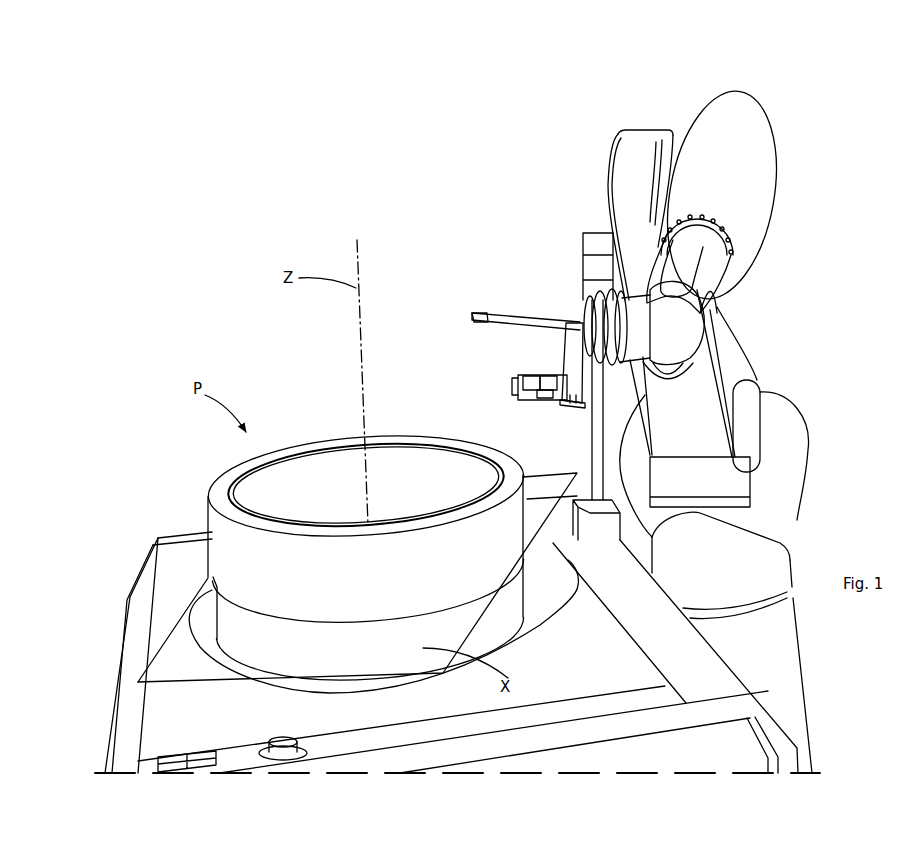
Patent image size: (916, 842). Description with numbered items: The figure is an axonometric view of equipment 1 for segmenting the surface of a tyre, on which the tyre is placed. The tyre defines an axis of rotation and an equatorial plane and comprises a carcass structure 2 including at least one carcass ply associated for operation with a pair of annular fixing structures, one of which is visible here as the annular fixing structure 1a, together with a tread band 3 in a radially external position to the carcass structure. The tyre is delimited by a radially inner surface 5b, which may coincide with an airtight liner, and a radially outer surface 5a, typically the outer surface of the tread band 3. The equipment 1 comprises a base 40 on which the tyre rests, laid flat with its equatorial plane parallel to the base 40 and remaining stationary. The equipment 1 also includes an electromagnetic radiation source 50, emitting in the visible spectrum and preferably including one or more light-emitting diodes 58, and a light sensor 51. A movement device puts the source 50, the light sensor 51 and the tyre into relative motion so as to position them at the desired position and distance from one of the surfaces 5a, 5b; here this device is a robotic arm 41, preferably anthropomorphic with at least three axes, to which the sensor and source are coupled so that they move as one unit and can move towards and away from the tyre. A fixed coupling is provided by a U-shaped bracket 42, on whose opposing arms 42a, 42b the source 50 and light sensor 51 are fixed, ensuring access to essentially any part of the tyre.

The equipment for segmenting the surface of a tyre 1 is at (406, 237).
The annular fixing structure 1a is at (455, 460).
The carcass structure 2 is at (323, 443).
The tread band 3 is at (207, 511).
The radially outer surface 5a is at (208, 560).
The radially inner surface 5b is at (298, 470).
The base 40 is at (722, 667).
The robotic arm 41 is at (760, 248).
The U-shaped bracket 42 is at (599, 362).
The arm of the U-shaped bracket 42a is at (573, 320).
The arm of the U-shaped bracket 42b is at (570, 408).
The electromagnetic radiation source 50 is at (481, 313).
The light sensor 51 is at (542, 403).
The light-emitting diode (LED) 58 is at (474, 325).